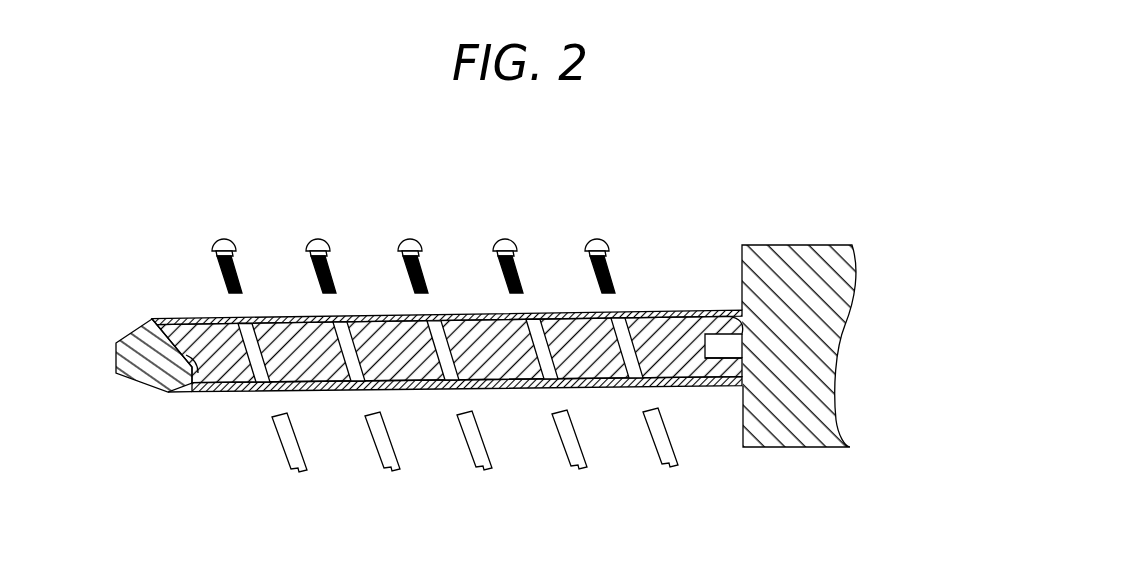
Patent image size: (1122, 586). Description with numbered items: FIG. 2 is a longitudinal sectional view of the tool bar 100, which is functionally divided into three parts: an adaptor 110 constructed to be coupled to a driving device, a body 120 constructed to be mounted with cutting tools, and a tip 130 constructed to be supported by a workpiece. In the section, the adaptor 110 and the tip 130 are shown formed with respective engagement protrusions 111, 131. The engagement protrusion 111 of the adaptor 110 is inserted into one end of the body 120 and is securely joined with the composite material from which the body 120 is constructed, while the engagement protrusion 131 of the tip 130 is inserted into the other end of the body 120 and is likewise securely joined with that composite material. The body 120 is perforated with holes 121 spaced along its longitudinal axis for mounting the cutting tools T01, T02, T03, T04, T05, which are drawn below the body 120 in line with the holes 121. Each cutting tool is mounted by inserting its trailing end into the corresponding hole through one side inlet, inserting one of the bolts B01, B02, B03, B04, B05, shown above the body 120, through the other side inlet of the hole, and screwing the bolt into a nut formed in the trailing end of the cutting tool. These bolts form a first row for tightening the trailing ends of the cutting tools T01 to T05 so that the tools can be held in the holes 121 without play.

The tool bar 100 is at (431, 137).
The adaptor 110 is at (802, 245).
The engagement protrusion 111 is at (720, 386).
The body 120 is at (693, 312).
The holes 121 is at (252, 330).
The tip 130 is at (152, 319).
The engagement protrusion 131 is at (205, 393).
The bolt B01 is at (222, 246).
The bolt B02 is at (317, 246).
The bolt B03 is at (413, 246).
The bolt B04 is at (504, 246).
The bolt B05 is at (596, 246).
The cutting tool T01 is at (297, 463).
The cutting tool T02 is at (388, 463).
The cutting tool T03 is at (479, 462).
The cutting tool T04 is at (573, 462).
The cutting tool T05 is at (668, 461).